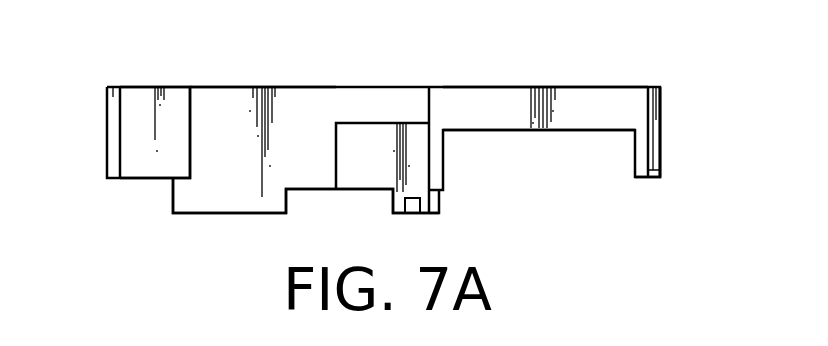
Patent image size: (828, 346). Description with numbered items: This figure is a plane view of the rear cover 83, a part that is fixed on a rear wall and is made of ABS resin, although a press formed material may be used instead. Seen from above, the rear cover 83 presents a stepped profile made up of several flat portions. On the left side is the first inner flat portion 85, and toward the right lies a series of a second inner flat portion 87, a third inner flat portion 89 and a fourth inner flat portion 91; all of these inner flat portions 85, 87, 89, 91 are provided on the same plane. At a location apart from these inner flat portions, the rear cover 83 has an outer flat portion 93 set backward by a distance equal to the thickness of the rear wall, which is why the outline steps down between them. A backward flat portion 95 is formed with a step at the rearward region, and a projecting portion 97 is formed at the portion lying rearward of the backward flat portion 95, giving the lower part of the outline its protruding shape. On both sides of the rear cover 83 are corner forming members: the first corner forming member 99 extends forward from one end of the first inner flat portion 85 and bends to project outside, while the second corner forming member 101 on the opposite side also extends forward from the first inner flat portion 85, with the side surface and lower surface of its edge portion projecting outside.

The rear cover 83 is at (431, 87).
The first inner flat portion 85 is at (176, 87).
The second inner flat portion 87 is at (495, 87).
The third inner flat portion 89 is at (575, 87).
The fourth inner flat portion 91 is at (640, 87).
The outer flat portion 93 is at (296, 87).
The backward flat portion 95 is at (378, 124).
The projecting portion 97 is at (306, 206).
The first corner forming member 99 is at (114, 87).
The second corner forming member 101 is at (662, 117).